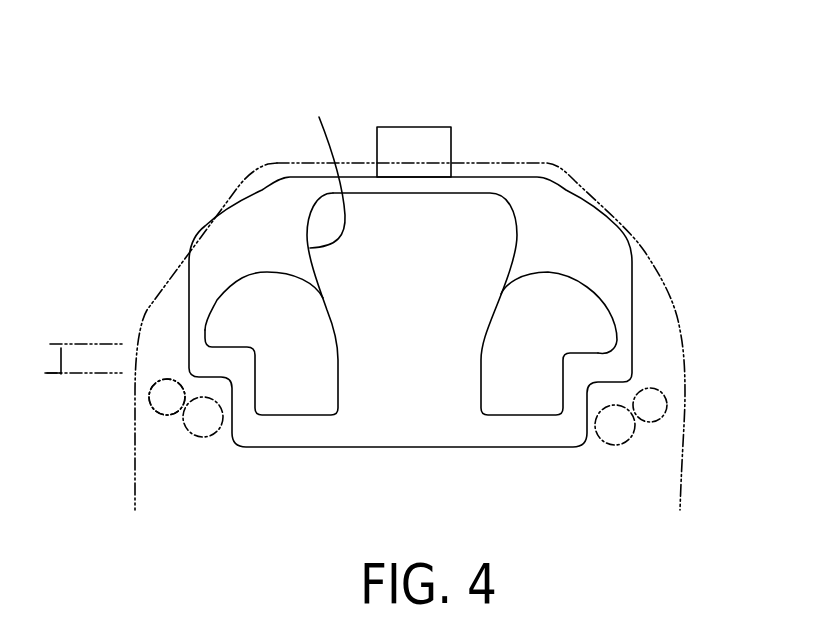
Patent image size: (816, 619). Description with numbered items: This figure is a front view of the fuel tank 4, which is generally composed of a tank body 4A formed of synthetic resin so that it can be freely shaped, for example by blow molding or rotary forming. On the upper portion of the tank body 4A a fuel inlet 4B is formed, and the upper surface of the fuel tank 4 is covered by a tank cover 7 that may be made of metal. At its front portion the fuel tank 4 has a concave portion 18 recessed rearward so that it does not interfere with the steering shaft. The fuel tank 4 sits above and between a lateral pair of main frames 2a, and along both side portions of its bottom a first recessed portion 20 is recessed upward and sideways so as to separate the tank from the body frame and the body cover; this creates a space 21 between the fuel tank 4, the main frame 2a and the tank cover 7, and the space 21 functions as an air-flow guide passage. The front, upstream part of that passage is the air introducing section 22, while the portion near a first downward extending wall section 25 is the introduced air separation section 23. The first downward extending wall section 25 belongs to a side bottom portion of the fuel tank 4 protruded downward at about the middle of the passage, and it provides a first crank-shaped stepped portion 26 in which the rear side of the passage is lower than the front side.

The fuel tank 4 is at (410, 229).
The tank body 4A is at (582, 202).
The fuel inlet 4B is at (410, 127).
The tank cover 7 is at (162, 267).
The concave portion 18 is at (323, 171).
The first recessed portion 20 is at (243, 390).
The space 21 is at (207, 438).
The air introducing section 22 is at (604, 362).
The introduced air separation section 23 is at (598, 395).
The first downward extending wall section 25 is at (210, 367).
The first crank-shaped stepped portion 26 is at (60, 360).
The main frame 2a is at (150, 394).